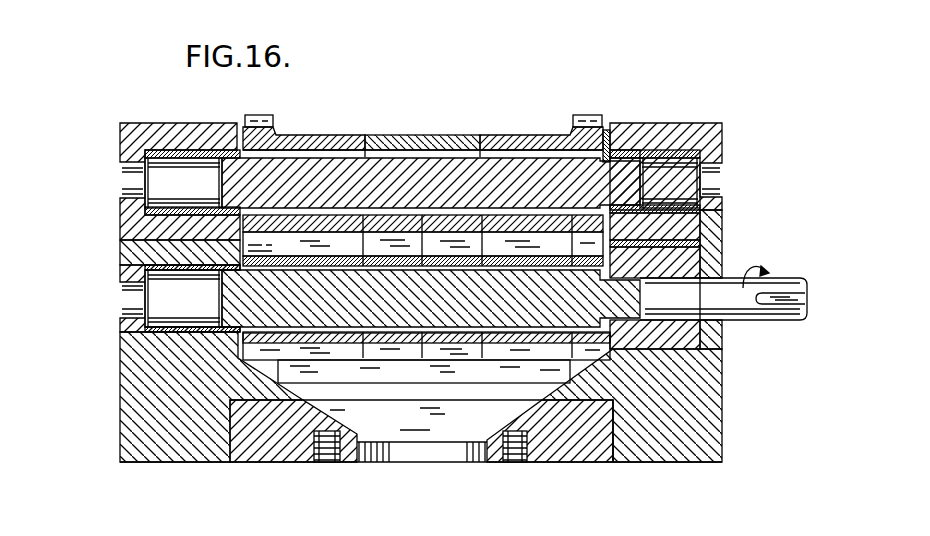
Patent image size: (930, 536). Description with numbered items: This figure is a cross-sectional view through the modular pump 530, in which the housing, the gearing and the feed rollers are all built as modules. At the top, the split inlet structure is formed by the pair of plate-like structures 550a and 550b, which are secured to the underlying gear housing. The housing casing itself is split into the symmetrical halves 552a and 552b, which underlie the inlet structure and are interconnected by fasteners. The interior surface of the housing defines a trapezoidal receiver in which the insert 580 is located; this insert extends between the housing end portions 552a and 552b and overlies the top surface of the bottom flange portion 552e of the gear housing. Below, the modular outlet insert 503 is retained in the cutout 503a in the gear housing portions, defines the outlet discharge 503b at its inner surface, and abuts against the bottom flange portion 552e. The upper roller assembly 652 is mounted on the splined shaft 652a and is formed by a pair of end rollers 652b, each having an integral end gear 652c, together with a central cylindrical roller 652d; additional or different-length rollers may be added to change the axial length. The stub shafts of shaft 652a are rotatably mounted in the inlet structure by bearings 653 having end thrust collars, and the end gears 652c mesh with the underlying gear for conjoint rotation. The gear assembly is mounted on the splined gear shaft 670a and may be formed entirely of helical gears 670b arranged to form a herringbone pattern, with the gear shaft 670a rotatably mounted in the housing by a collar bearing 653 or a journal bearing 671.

The modular outlet insert 503 is at (553, 450).
The cutout 503a is at (610, 443).
The outlet discharge 503b is at (342, 432).
The pump 530 is at (693, 108).
The plate-like structure 550a is at (121, 148).
The plate-like structure 550b is at (724, 135).
The housing half 552a is at (693, 450).
The housing half 552b is at (187, 448).
The bottom flange portion 552e is at (472, 387).
The insert 580 is at (383, 370).
The roller assembly 652 is at (442, 128).
The splined shaft 652a is at (688, 180).
The end roller 652b is at (321, 143).
The end gear 652c is at (260, 116).
The central cylindrical roller 652d is at (397, 143).
The bearing 653 is at (181, 150).
The gear shaft 670a is at (764, 318).
The helical gear 670b is at (335, 350).
The journal bearing 671 is at (690, 262).